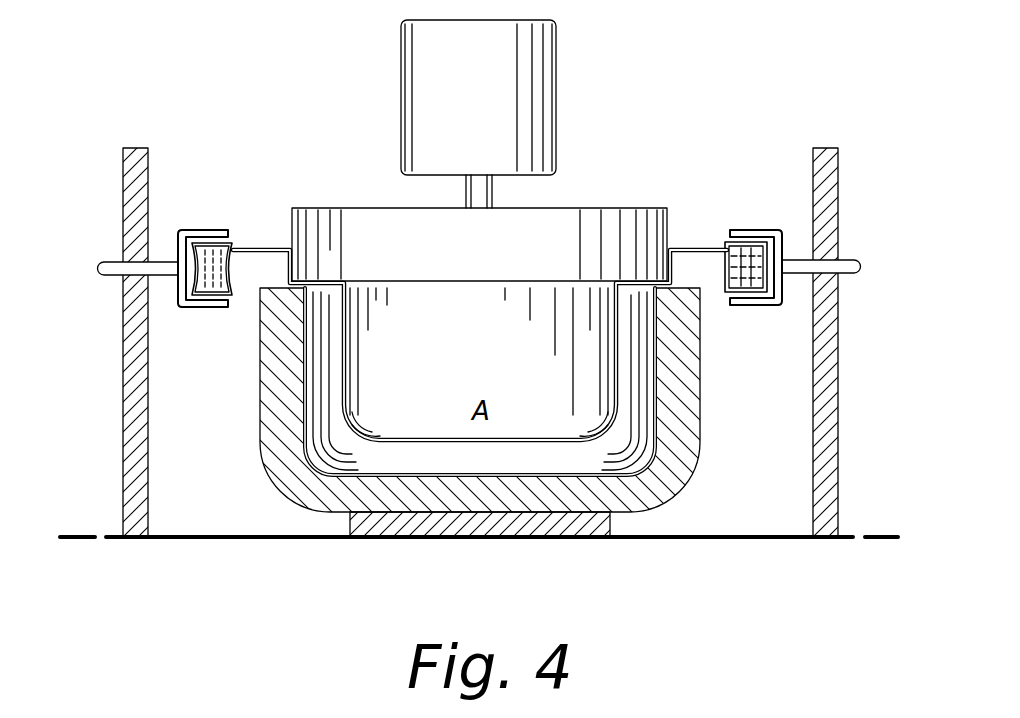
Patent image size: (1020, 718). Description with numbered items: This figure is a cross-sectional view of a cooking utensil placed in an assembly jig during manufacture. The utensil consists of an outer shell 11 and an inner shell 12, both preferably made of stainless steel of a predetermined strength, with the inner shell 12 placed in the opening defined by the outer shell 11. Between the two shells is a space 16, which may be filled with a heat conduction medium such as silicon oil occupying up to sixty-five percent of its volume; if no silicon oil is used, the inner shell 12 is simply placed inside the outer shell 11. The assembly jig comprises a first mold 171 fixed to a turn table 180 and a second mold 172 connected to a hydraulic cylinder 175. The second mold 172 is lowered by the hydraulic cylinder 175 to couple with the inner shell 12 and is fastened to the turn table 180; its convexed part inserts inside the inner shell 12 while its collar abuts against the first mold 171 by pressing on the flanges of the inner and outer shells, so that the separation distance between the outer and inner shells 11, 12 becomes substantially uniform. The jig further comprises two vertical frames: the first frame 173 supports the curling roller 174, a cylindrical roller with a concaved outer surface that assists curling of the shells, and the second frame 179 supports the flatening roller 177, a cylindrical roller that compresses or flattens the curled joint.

The outer shell 11 is at (481, 400).
The inner shell 12 is at (348, 343).
The space 16 is at (625, 408).
The first mold 171 is at (662, 468).
The second mold 172 is at (626, 207).
The first frame 173 is at (122, 364).
The curling roller 174 is at (213, 268).
The hydraulic cylinder 175 is at (537, 47).
The flatening roller 177 is at (730, 270).
The second frame 179 is at (838, 446).
The turn table 180 is at (612, 522).